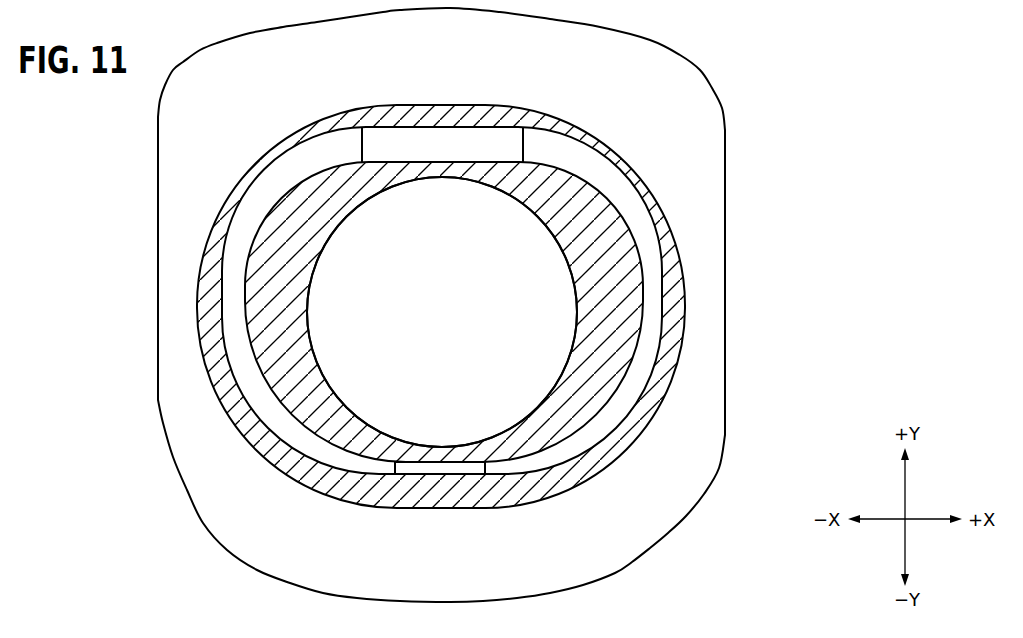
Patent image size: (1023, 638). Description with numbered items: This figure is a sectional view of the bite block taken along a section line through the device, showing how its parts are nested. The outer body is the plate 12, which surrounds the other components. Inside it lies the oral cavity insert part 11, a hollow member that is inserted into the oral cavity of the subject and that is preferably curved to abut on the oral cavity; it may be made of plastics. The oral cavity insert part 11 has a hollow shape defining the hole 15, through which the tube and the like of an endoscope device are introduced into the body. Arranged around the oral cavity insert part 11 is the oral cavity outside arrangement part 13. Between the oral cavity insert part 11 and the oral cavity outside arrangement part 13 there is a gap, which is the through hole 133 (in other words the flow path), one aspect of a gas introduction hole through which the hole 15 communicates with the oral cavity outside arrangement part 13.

The plate 12 is at (708, 157).
The oral cavity insert part 11 is at (677, 297).
The oral cavity outside arrangement part 13 is at (605, 385).
The hole 15 is at (352, 350).
The through hole 133 is at (470, 468).